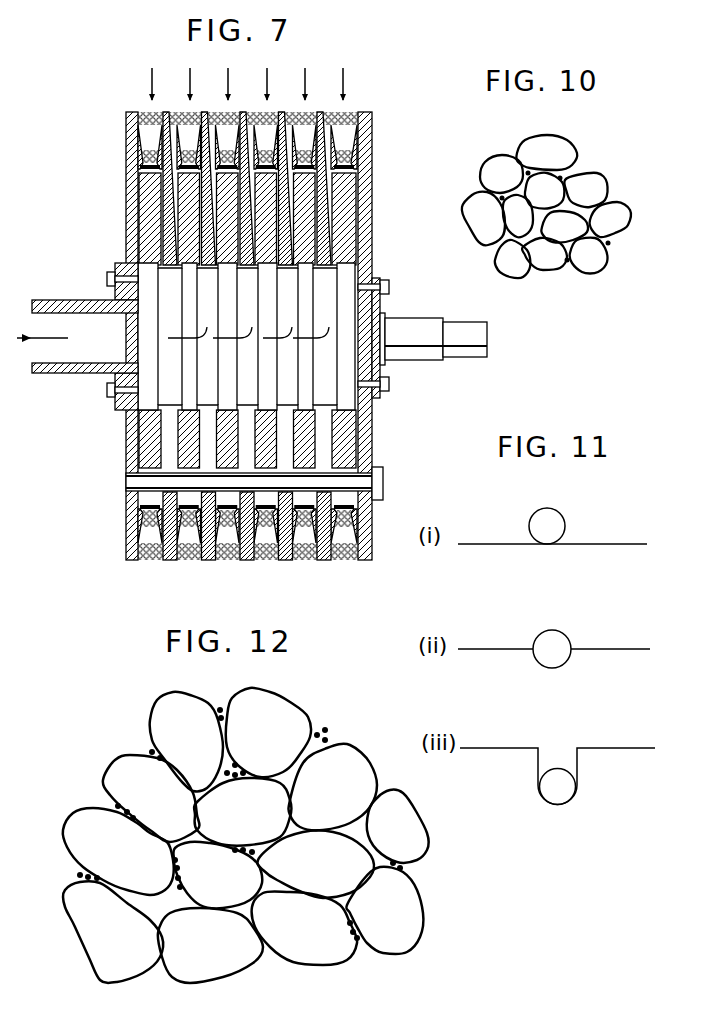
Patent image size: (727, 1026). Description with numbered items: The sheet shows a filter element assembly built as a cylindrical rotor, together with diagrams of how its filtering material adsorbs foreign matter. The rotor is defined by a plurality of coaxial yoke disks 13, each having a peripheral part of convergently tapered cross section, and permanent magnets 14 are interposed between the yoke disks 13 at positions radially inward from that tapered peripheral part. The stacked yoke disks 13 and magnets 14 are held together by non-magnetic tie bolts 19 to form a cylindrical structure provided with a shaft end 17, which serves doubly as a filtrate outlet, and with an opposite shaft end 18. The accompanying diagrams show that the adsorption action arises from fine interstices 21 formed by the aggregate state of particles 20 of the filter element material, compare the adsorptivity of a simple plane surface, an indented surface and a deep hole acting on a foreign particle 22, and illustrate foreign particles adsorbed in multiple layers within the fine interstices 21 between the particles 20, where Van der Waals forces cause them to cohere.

In FIG. 7, the yoke disks 13 is at (163, 112).
In FIG. 7, the permanent magnets 14 is at (148, 212).
In FIG. 7, the shaft end 17 is at (32, 316).
In FIG. 7, the opposite shaft end 18 is at (413, 345).
In FIG. 7, the non-magnetic tie bolts 19 is at (381, 483).
In FIG. 10, the particles of filter element material 20 is at (527, 172).
In FIG. 12, the particles of filter element material 20 is at (135, 753).
In FIG. 10, the fine interstices 21 is at (560, 178).
In FIG. 11, the particle 22 is at (563, 516).
In FIG. 12, the particle 22 is at (326, 728).